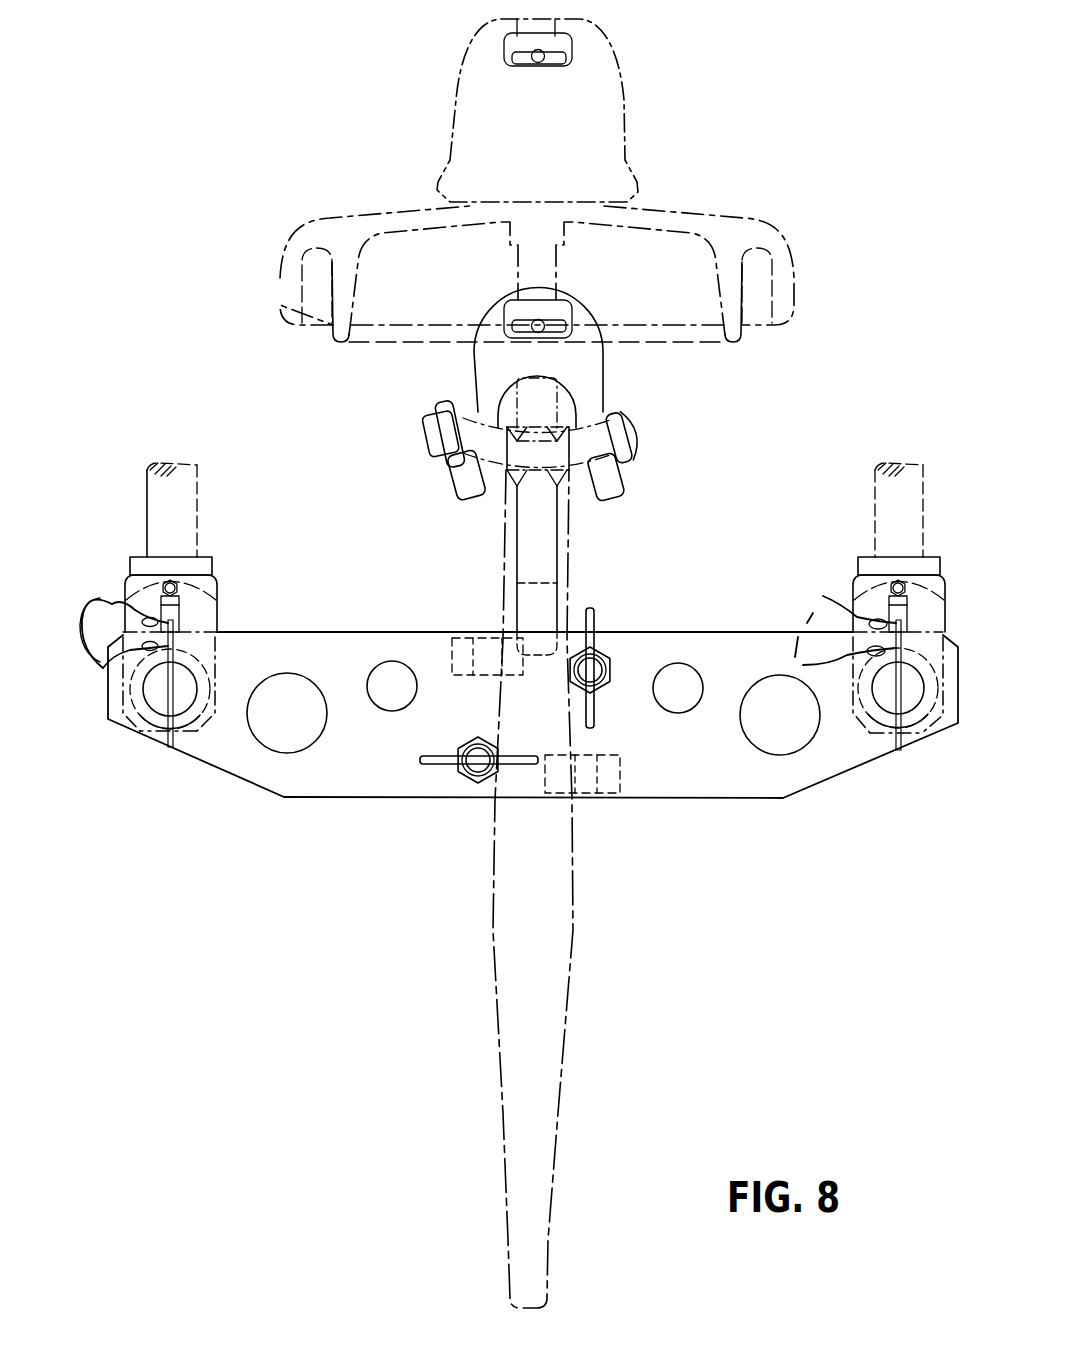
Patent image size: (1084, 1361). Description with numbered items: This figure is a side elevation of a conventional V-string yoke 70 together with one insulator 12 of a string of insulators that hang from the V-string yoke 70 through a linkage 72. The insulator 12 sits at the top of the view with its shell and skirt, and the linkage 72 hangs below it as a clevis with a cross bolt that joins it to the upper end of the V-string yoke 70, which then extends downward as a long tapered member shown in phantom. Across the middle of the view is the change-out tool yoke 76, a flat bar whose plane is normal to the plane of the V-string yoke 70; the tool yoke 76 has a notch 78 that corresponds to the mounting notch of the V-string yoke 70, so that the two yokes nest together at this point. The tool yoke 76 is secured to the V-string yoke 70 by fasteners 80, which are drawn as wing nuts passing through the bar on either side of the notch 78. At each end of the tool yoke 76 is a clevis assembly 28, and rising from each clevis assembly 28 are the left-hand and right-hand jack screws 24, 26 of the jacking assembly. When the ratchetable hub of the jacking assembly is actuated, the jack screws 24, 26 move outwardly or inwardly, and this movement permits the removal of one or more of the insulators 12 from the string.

The insulator 12 is at (665, 163).
The linkage 72 is at (619, 397).
The notch 78 is at (540, 637).
The V-string yoke 70 is at (590, 874).
The change-out tool yoke 76 is at (332, 768).
The fasteners 80 is at (590, 668).
The clevis assembly 28 is at (233, 575).
The left-hand jack screw 24 is at (174, 508).
The right-hand jack screw 26 is at (897, 500).